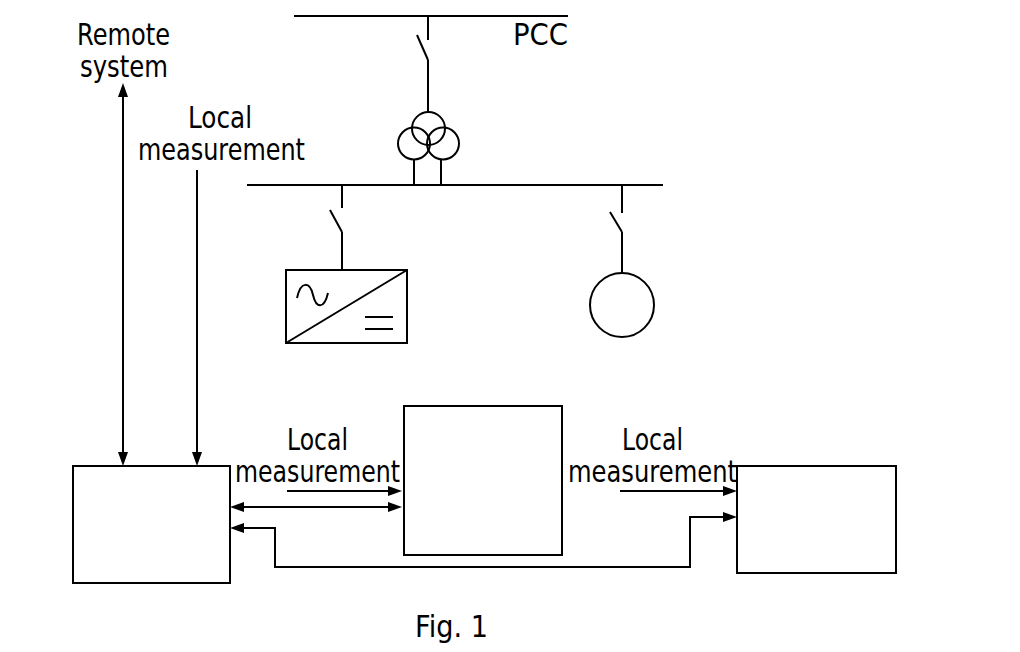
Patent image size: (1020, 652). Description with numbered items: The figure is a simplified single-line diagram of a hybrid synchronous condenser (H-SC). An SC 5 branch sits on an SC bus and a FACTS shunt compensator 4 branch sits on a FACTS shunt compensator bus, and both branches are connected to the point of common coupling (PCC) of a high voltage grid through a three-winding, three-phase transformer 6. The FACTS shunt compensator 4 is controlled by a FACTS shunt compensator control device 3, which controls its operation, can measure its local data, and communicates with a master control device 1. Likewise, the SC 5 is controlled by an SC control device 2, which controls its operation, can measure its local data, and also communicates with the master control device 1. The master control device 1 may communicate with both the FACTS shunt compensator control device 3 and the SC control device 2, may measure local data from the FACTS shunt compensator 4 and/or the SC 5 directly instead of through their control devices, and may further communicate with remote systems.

The master control device 1 is at (144, 508).
The SC control device 2 is at (809, 500).
The FACTS shunt compensator control device 3 is at (475, 450).
The FACTS shunt compensator 4 is at (407, 270).
The SC 5 is at (654, 305).
The three-winding, three-phase transformer 6 is at (457, 135).